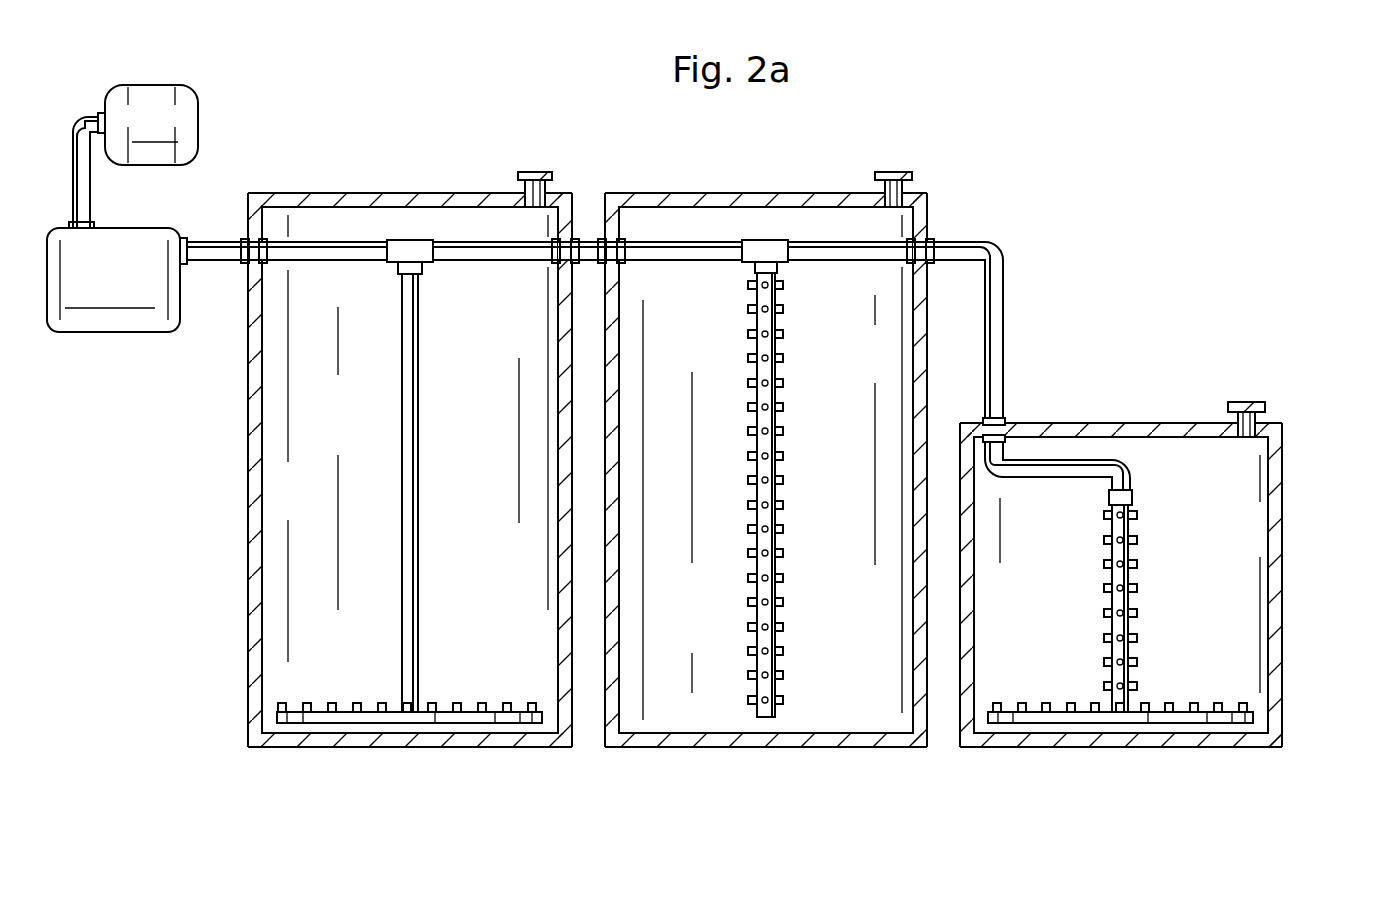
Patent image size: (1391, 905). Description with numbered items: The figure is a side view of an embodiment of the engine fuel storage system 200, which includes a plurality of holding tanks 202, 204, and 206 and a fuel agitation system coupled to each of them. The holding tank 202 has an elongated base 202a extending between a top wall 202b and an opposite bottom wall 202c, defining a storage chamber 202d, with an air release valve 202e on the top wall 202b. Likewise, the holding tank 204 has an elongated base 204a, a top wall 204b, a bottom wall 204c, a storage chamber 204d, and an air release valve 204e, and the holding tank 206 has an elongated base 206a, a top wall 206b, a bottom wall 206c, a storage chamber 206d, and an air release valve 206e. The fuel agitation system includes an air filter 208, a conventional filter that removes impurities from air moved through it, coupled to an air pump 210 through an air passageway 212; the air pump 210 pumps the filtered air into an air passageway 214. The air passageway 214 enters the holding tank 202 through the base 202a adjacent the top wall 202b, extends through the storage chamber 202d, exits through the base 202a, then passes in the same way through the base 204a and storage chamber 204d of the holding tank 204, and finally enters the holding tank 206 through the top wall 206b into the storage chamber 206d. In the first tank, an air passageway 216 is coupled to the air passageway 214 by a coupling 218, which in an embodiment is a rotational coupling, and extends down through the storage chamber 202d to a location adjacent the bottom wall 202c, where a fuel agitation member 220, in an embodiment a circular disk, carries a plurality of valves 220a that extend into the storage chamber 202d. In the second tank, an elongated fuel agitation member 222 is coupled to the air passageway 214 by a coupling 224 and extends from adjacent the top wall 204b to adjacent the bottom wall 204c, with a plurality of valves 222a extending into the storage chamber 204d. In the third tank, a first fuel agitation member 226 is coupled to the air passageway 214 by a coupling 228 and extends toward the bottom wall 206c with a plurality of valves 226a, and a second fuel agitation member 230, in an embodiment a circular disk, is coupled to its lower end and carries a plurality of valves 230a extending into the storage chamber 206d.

The engine fuel storage system 200 is at (1195, 132).
The holding tank 202 is at (364, 469).
The elongated base 202a is at (247, 582).
The top wall 202b is at (395, 192).
The bottom wall 202c is at (523, 748).
The storage chamber 202d is at (293, 489).
The air release valve 202e is at (537, 170).
The holding tank 204 is at (819, 468).
The elongated base 204a is at (930, 214).
The top wall 204b is at (778, 192).
The bottom wall 204c is at (774, 748).
The storage chamber 204d is at (883, 714).
The air release valve 204e is at (895, 170).
The holding tank 206 is at (1175, 583).
The elongated base 206a is at (1284, 677).
The top wall 206b is at (1118, 422).
The bottom wall 206c is at (1238, 748).
The storage chamber 206d is at (1250, 518).
The air release valve 206e is at (1249, 401).
The air filter 208 is at (199, 122).
The air pump 210 is at (116, 333).
The air passageway 212 is at (90, 203).
The air passageway 214 is at (220, 263).
The air passageway 216 is at (401, 423).
The coupling 218 is at (396, 265).
The fuel agitation member 220 is at (421, 681).
The valves 220a is at (338, 702).
The elongated fuel agitation member 222 is at (767, 495).
The valves 222a is at (747, 358).
The coupling 224 is at (752, 266).
The first fuel agitation member 226 is at (1127, 608).
The valves 226a is at (1076, 603).
The coupling 228 is at (1134, 498).
The second fuel agitation member 230 is at (1131, 681).
The valves 230a is at (1045, 702).